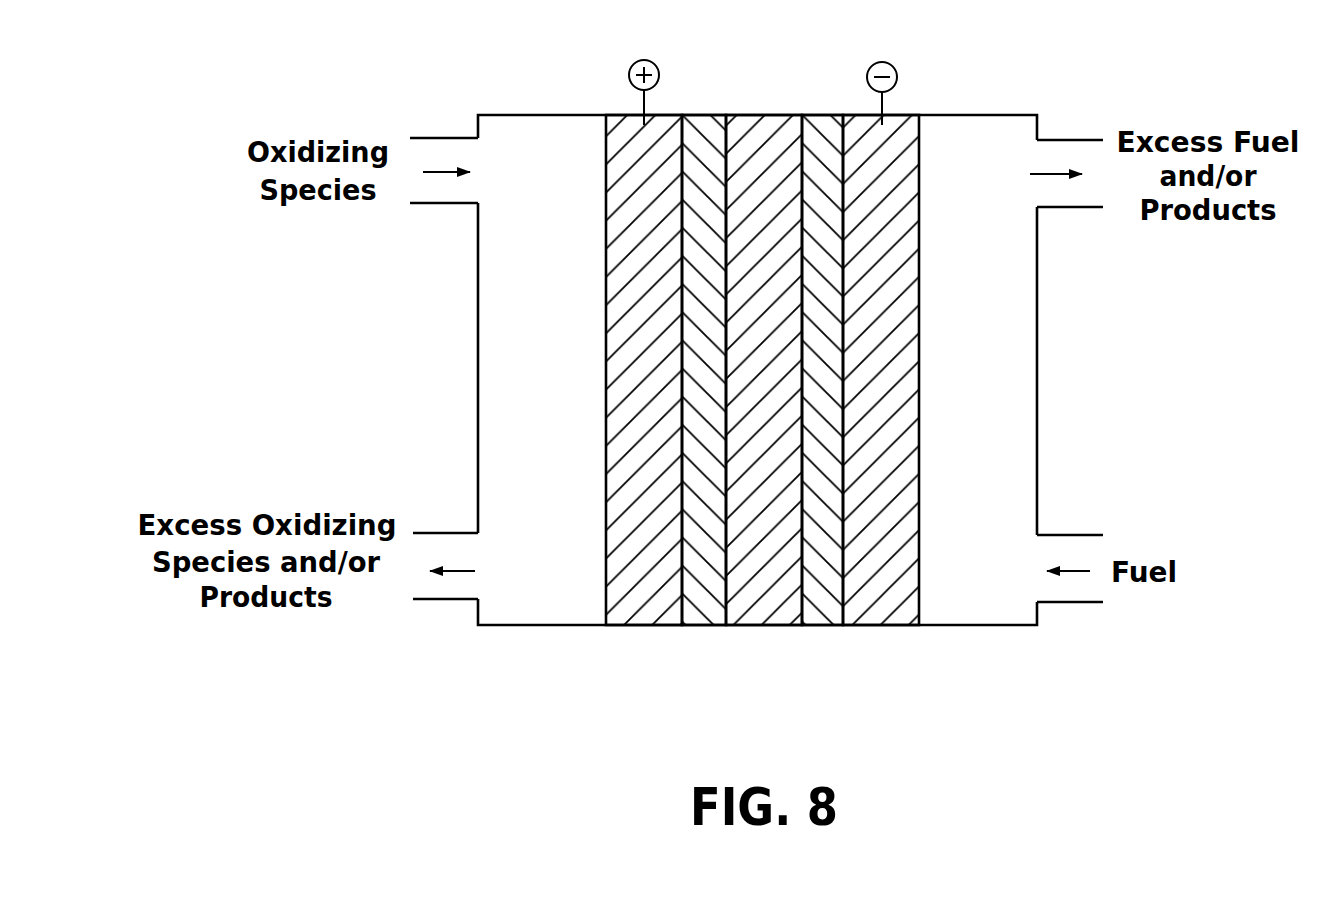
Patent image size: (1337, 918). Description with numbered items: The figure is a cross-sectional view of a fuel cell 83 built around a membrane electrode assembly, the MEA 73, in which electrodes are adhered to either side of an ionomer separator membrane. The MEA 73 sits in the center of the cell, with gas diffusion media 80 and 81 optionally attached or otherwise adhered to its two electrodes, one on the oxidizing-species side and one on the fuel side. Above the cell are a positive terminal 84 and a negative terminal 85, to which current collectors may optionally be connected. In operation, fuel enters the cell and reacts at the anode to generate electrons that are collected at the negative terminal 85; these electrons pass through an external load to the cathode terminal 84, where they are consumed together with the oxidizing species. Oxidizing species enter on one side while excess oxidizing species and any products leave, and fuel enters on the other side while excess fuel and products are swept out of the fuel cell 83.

The MEA 73 is at (842, 693).
The gas diffusion media 80 is at (624, 613).
The gas diffusion media 81 is at (883, 607).
The fuel cell 83 is at (477, 106).
The positive terminal 84 is at (631, 66).
The negative terminal 85 is at (895, 68).